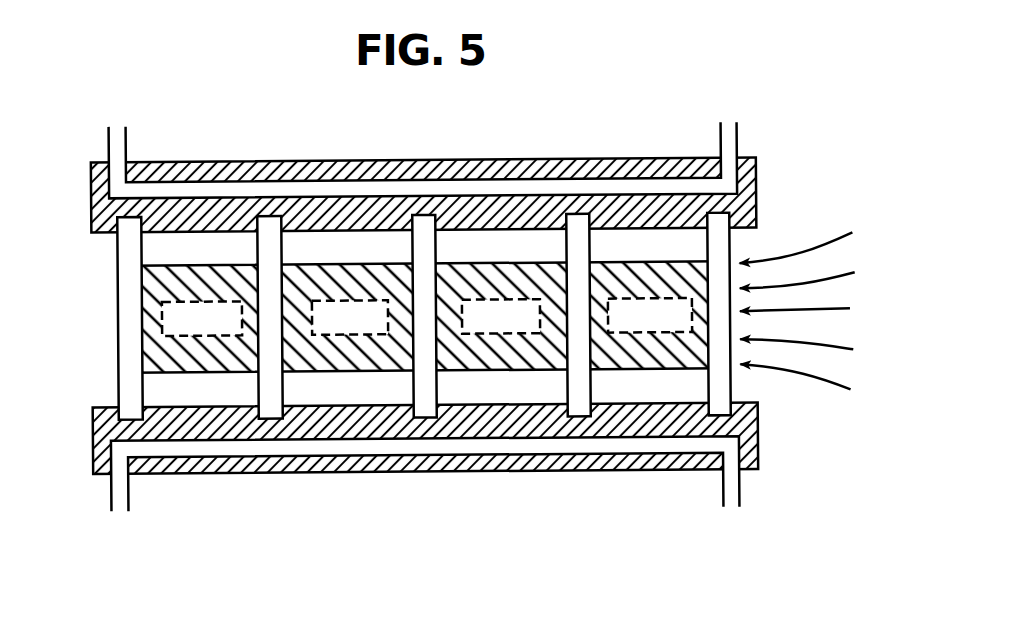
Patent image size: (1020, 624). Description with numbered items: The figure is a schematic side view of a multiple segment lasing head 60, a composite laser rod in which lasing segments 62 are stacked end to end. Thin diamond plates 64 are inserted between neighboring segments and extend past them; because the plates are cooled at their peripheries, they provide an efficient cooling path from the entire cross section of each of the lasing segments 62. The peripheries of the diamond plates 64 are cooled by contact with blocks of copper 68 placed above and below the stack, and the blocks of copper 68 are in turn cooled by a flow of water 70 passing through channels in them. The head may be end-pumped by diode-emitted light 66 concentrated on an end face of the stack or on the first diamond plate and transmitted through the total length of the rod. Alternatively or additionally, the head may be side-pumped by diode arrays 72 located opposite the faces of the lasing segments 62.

The multiple segment lasing head 60 is at (459, 318).
The lasing segments 62 is at (368, 366).
The thin diamond plates 64 is at (118, 357).
The diode-emitted light 66 is at (815, 311).
The blocks of copper 68 is at (92, 200).
The flow of water 70 is at (118, 138).
The diode arrays 72 is at (356, 315).